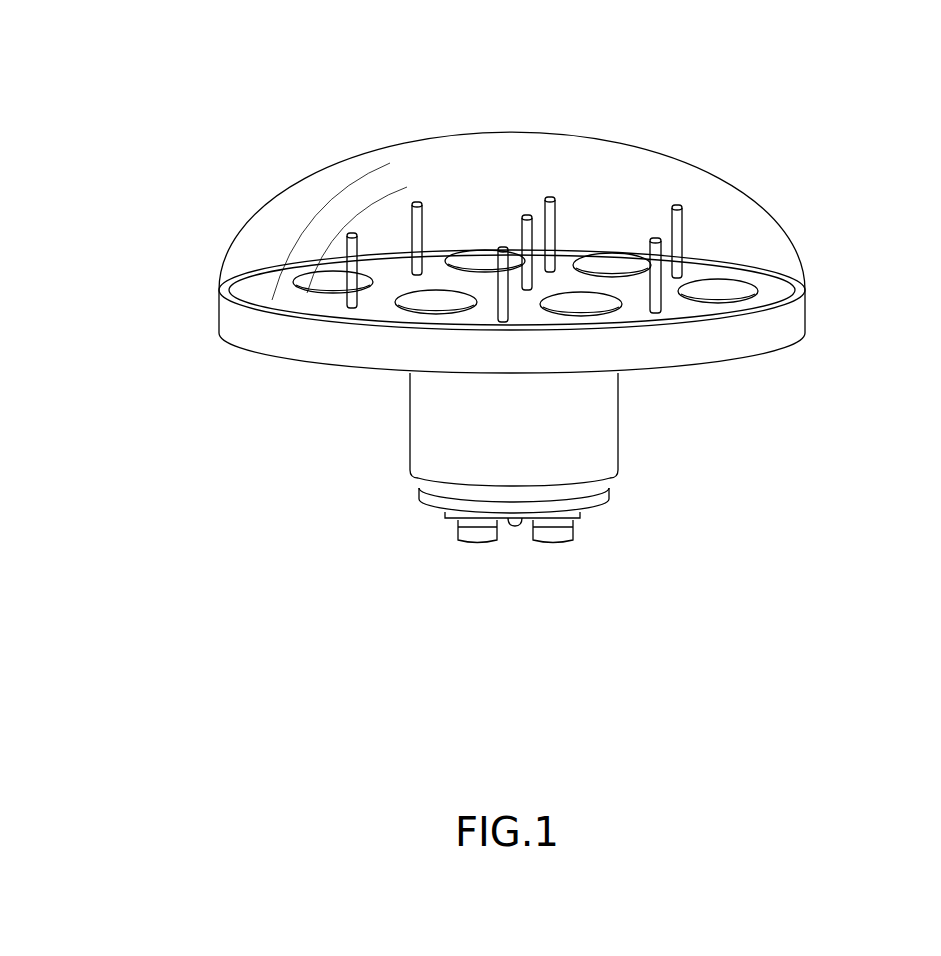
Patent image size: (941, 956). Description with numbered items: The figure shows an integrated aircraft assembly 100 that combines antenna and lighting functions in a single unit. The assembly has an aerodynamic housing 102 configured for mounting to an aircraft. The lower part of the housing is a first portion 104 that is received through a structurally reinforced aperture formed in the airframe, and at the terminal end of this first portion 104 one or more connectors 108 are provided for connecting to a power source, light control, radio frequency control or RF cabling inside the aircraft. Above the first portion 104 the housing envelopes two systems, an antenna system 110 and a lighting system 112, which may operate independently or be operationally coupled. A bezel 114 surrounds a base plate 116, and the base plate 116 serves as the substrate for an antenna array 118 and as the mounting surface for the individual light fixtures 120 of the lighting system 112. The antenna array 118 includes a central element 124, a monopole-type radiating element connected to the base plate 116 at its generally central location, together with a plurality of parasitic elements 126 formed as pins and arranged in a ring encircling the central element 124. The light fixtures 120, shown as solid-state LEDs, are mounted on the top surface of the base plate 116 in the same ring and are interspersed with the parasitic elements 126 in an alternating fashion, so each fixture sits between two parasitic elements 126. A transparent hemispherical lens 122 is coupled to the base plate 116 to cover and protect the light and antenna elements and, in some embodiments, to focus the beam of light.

The integrated aircraft assembly 100 is at (192, 62).
The aerodynamic housing 102 is at (511, 449).
The first portion 104 is at (625, 432).
The connectors 108 is at (560, 530).
The antenna system 110 is at (408, 198).
The lighting system 112 is at (318, 297).
The bezel 114 is at (798, 323).
The base plate 116 is at (783, 292).
The antenna array 118 is at (683, 196).
The light fixtures 120 is at (720, 289).
The hemispherical lens 122 is at (648, 157).
The central element 124 is at (527, 213).
The parasitic elements 126 is at (550, 195).